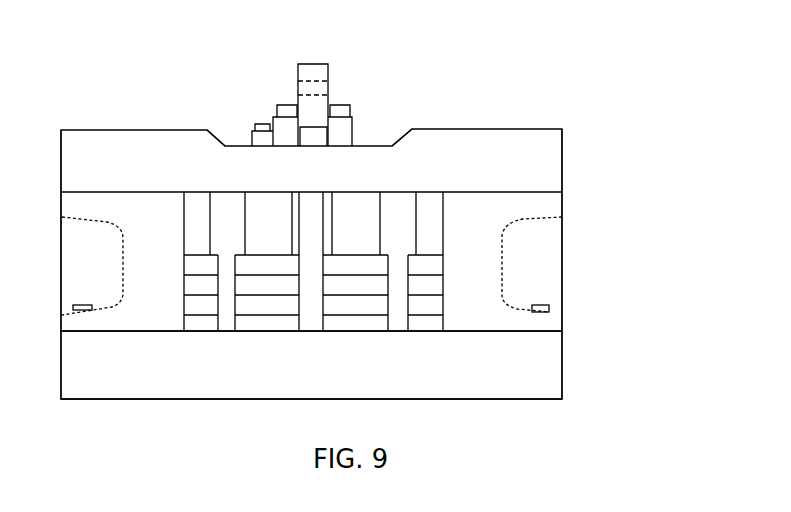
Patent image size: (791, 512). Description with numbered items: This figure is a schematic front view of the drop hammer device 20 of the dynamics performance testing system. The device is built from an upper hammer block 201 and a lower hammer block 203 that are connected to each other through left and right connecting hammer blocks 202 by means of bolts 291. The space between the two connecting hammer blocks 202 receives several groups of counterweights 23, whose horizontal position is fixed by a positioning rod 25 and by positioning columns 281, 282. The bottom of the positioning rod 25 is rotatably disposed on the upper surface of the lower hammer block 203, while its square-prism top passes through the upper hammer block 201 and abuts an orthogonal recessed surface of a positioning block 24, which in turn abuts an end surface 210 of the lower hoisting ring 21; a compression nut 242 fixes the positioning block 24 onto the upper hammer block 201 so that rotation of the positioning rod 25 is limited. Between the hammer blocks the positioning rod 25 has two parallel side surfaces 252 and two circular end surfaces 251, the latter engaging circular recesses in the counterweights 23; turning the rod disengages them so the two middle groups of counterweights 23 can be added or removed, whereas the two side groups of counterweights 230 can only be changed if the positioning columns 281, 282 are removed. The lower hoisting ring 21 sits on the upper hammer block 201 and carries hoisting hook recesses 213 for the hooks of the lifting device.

The housing 20 is at (572, 228).
The upper hammer block 201 is at (547, 160).
The connecting hammer block 202 is at (553, 327).
The lower hammer block 203 is at (545, 378).
The bolt 291 is at (537, 305).
The lower hoisting ring 21 is at (328, 66).
The hoisting hook recess 213 is at (307, 90).
The end surface 210 is at (318, 72).
The positioning block 24 is at (252, 133).
The compression nut 242 is at (263, 122).
The positioning rod 25 is at (312, 140).
The counterweights on both sides 230 is at (205, 323).
The counterweight 23 is at (262, 323).
The parallel side surface 252 is at (307, 220).
The circular end surface 251 is at (327, 238).
The positioning column 282 is at (227, 208).
The positioning column 281 is at (395, 213).